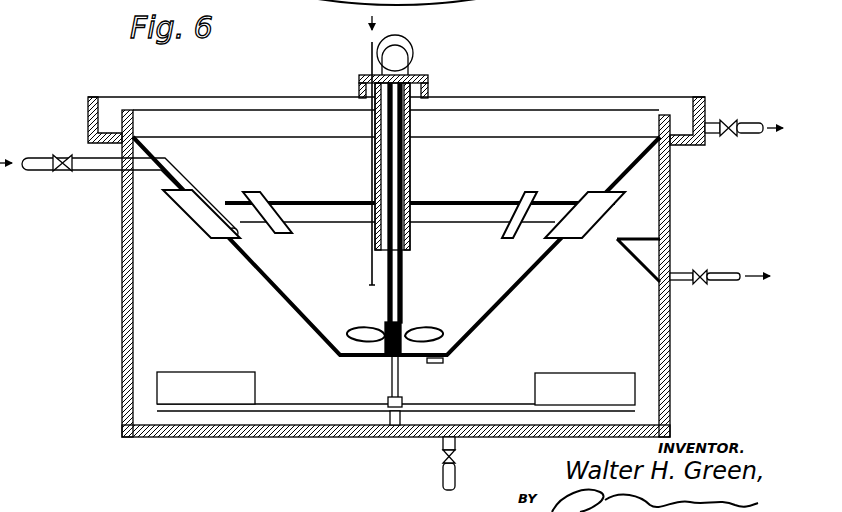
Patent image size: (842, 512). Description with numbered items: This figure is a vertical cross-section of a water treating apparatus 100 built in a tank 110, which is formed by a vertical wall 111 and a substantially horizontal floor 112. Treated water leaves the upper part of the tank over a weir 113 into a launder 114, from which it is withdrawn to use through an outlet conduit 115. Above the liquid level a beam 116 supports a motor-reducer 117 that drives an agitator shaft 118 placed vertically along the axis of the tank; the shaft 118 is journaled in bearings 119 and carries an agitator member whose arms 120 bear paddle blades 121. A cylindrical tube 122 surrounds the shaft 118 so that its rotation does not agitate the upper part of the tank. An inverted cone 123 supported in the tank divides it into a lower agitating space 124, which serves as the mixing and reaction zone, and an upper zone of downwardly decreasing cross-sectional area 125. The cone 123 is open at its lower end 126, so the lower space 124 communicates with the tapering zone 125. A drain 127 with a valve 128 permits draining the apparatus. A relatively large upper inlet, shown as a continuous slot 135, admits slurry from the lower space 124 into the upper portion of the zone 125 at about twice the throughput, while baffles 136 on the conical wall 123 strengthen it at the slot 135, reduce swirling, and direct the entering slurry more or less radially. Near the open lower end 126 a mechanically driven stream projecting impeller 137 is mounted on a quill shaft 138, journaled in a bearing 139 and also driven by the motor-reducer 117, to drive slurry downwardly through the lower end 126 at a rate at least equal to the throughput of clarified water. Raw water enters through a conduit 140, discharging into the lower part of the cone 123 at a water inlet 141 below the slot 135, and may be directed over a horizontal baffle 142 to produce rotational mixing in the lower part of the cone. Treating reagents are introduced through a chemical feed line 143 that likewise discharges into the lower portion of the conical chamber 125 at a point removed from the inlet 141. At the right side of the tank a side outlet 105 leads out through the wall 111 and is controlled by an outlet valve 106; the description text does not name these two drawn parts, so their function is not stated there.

The triangular weir baffle 100 is at (638, 242).
The overflow outlet 105 is at (685, 272).
The outlet valve 106 is at (697, 282).
The tank 110 is at (525, 112).
The vertical wall 111 is at (671, 372).
The horizontal floor 112 is at (223, 437).
The weir 113 is at (674, 118).
The launder 114 is at (679, 123).
The outlet conduit 115 is at (756, 134).
The beam 116 is at (418, 78).
The motor-reducer 117 is at (401, 52).
The agitator shaft 118 is at (392, 381).
The bearings 119 is at (372, 431).
The arms 120 is at (302, 403).
The paddle blades 121 is at (206, 378).
The cylindrical tube 122 is at (412, 165).
The inverted cone 123 is at (630, 175).
The lower agitating space 124 is at (620, 330).
The upper zone of downwardly decreasing cross-sectional area 125 is at (557, 137).
The open lower end 126 is at (440, 362).
The drain 127 is at (445, 438).
The valve 128 is at (456, 459).
The continuous slot 135 is at (315, 202).
The baffles 136 is at (193, 211).
The stream projecting impeller 137 is at (433, 330).
The quill shaft 138 is at (403, 268).
The bearing 139 is at (402, 357).
The conduit 140 is at (73, 173).
The water inlet 141 is at (228, 238).
The horizontal baffle 142 is at (259, 253).
The chemical feed line 143 is at (370, 47).